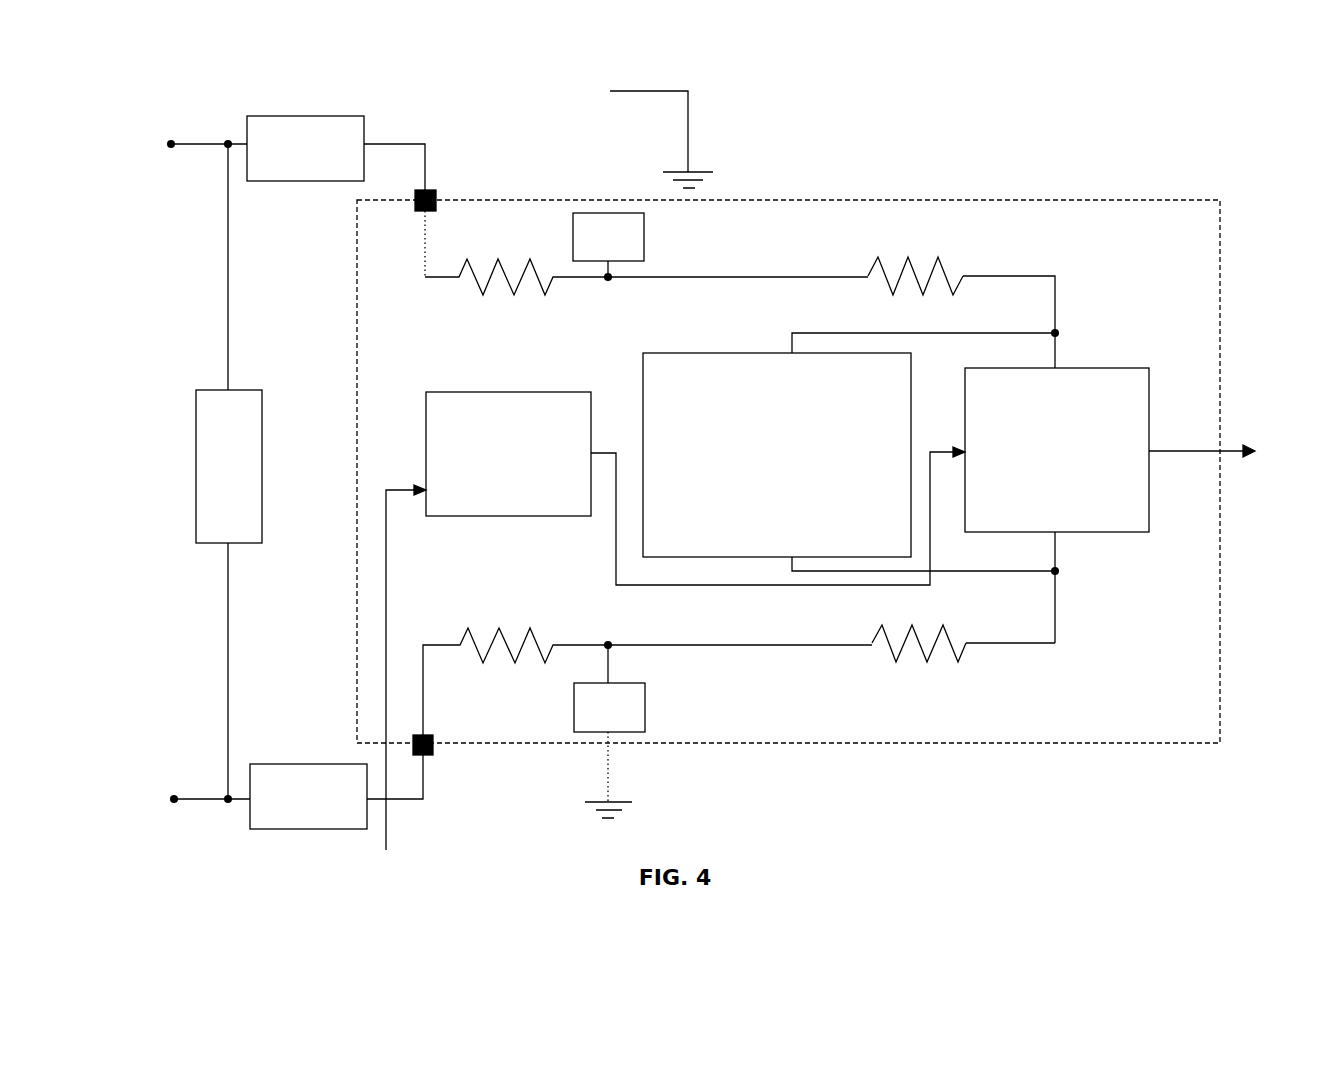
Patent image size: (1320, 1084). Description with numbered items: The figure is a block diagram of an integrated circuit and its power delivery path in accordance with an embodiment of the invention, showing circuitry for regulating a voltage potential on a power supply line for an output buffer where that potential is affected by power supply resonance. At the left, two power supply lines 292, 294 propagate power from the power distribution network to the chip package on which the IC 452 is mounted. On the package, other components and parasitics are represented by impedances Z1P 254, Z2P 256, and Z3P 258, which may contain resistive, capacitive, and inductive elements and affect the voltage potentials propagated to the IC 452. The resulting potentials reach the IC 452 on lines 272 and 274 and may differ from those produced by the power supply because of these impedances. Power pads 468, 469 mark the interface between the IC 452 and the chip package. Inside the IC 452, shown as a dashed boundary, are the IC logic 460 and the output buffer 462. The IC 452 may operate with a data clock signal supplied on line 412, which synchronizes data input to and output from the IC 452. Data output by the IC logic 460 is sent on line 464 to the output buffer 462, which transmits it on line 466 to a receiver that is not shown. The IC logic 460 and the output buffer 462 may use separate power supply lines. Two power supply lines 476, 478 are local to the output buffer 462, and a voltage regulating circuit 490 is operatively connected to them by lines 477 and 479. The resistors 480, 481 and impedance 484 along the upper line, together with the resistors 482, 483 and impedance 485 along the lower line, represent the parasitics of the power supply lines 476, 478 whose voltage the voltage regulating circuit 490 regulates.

The power supply line 292 is at (196, 143).
The impedance Z1P 254 is at (292, 116).
The line 272 is at (413, 144).
The power pad 468 is at (437, 190).
The impedance Z3P 258 is at (262, 428).
The power supply line 294 is at (195, 800).
The impedance Z2P 256 is at (285, 830).
The line 274 is at (410, 800).
The power pad 469 is at (433, 752).
The IC 452 is at (728, 199).
The line 412 is at (387, 567).
The IC logic 460 is at (448, 392).
The voltage regulating circuit 490 is at (698, 353).
The output buffer 462 is at (1122, 368).
The line 466 is at (1170, 451).
The line 464 is at (765, 585).
The line 477 is at (880, 333).
The line 479 is at (1013, 572).
The impedance 484 is at (585, 212).
The resistor 480 is at (515, 295).
The resistor 481 is at (908, 257).
The power supply line 476 is at (1005, 275).
The resistor 482 is at (515, 663).
The resistor 483 is at (896, 662).
The power supply line 478 is at (995, 644).
The impedance 485 is at (590, 732).